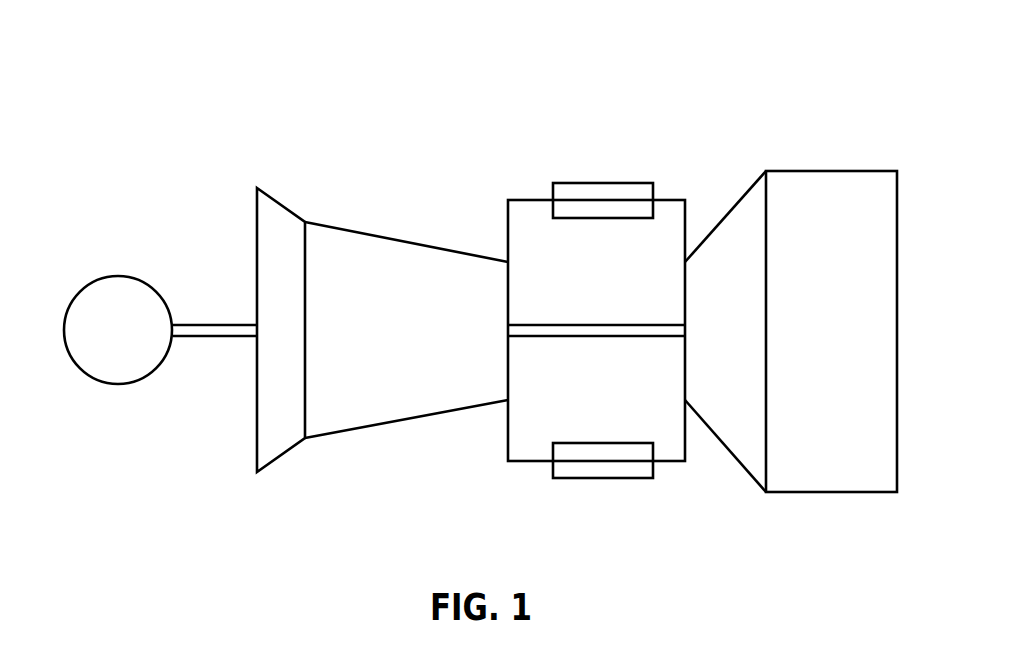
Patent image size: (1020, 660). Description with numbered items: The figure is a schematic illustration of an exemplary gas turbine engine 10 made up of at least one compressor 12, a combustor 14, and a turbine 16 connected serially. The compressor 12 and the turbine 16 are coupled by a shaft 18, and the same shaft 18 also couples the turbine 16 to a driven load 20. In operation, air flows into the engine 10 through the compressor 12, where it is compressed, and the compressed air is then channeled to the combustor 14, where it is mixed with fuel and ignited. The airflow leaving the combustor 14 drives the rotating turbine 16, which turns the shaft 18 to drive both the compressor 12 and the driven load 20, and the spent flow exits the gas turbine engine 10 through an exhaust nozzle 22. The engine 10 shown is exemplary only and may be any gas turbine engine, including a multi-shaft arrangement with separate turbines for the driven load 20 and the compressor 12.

The gas turbine engine 10 is at (381, 63).
The compressor 12 is at (388, 238).
The combustor 14 is at (604, 183).
The turbine 16 is at (742, 193).
The shaft 18 is at (214, 339).
The driven load 20 is at (120, 276).
The exhaust nozzle 22 is at (845, 171).